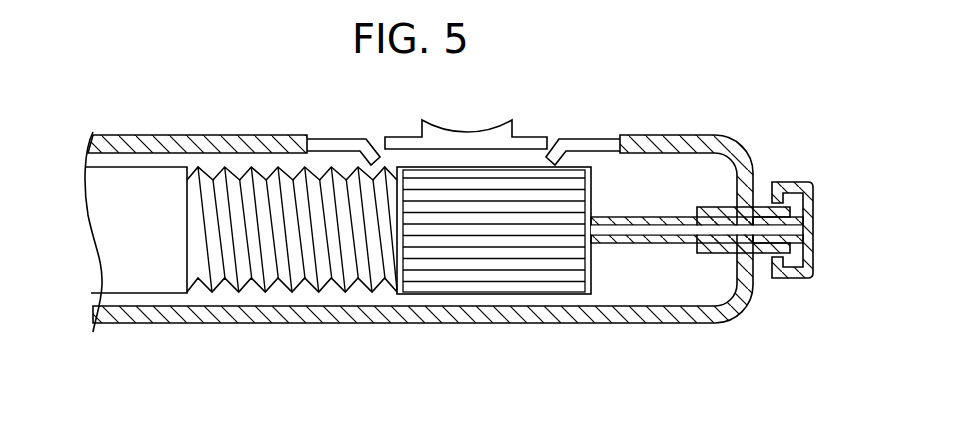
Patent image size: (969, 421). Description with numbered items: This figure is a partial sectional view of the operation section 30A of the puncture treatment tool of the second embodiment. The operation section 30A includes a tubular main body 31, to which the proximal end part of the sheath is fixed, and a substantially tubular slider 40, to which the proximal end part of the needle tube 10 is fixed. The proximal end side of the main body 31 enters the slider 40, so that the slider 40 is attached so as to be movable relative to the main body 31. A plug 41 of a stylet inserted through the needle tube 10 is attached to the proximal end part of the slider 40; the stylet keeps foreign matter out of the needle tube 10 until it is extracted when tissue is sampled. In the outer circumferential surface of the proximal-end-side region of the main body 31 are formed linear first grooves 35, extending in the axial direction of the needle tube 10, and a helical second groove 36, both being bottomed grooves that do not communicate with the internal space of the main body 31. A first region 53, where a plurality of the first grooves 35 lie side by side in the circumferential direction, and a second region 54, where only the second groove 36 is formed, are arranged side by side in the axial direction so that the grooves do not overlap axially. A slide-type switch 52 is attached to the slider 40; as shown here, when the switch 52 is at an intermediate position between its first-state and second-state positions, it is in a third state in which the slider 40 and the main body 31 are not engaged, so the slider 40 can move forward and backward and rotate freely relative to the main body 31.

The needle tube 10 is at (663, 243).
The operation section 30A is at (295, 126).
The main body 31 is at (142, 273).
The first groove 35 is at (460, 265).
The second groove 36 is at (228, 270).
The slider 40 is at (332, 317).
The plug 41 is at (795, 181).
The slide-type switch 52 is at (470, 131).
The first region 53 is at (532, 305).
The second region 54 is at (279, 290).